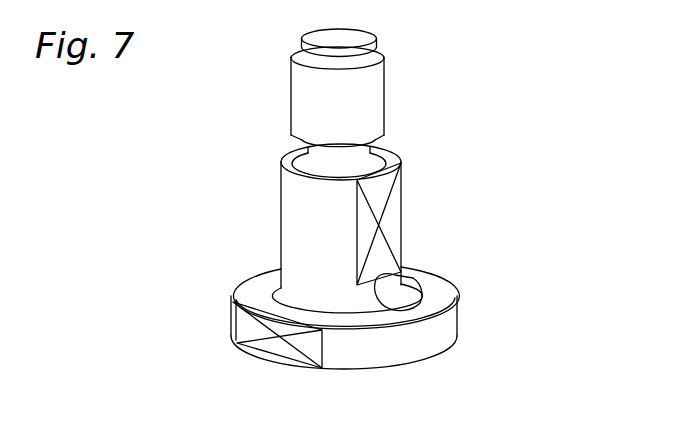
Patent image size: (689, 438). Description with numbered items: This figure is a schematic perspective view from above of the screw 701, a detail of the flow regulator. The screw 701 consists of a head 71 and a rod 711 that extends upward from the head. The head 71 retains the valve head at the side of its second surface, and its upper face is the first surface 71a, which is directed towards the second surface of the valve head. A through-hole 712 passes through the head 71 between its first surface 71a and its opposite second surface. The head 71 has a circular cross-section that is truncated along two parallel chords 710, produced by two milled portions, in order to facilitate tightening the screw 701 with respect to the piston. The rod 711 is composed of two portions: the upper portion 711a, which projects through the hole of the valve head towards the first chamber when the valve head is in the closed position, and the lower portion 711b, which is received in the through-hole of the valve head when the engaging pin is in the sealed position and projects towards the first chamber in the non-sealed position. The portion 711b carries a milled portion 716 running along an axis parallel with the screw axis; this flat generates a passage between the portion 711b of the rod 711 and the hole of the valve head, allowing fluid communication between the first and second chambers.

The screw 701 is at (427, 157).
The rod 711 is at (278, 155).
The portion of the rod 711a is at (353, 95).
The portion of the rod 711b is at (296, 213).
The milled portion 716 is at (387, 216).
The through-hole 712 is at (392, 303).
The head 71 is at (440, 318).
The first surface 71a is at (433, 287).
The parallel chords 710 is at (280, 350).